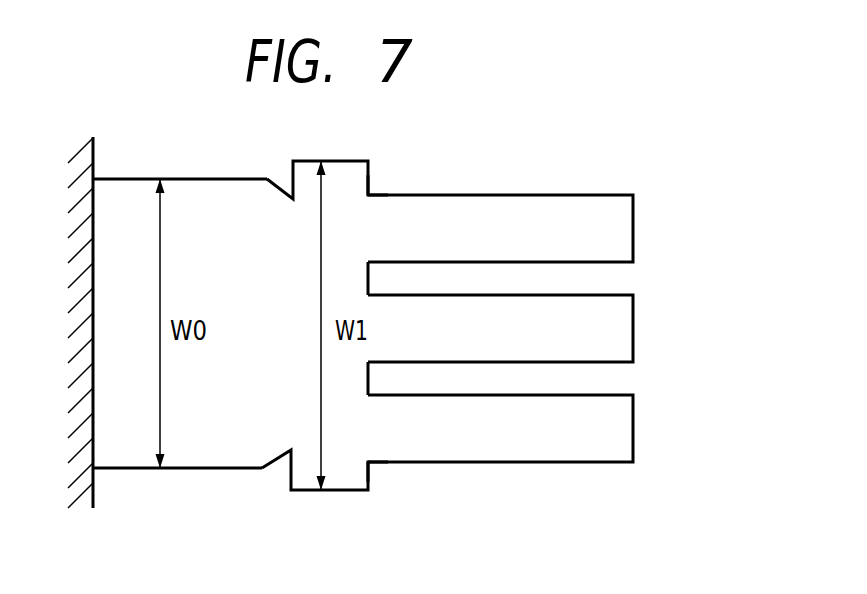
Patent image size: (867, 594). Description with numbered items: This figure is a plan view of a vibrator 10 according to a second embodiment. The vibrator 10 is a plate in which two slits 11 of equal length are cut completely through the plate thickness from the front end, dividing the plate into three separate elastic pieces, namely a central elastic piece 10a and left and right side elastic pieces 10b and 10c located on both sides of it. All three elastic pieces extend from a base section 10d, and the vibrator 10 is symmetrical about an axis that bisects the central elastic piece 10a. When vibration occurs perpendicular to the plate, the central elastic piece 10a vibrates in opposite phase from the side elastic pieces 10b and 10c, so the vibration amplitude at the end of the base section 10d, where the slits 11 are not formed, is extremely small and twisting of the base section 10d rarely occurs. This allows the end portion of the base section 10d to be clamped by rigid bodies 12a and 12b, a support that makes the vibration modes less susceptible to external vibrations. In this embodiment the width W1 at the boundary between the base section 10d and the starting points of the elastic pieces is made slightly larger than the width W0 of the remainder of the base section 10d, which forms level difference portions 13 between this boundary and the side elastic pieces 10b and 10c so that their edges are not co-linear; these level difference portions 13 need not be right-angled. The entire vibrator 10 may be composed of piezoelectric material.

The vibrator 10 is at (405, 333).
The central elastic piece 10a is at (612, 340).
The side elastic piece 10b is at (616, 236).
The side elastic piece 10c is at (612, 440).
The base section 10d is at (247, 452).
The slit 11 is at (609, 277).
The rigid body 12a is at (93, 479).
The rigid body 12b is at (143, 520).
The level difference portion 13 is at (378, 178).